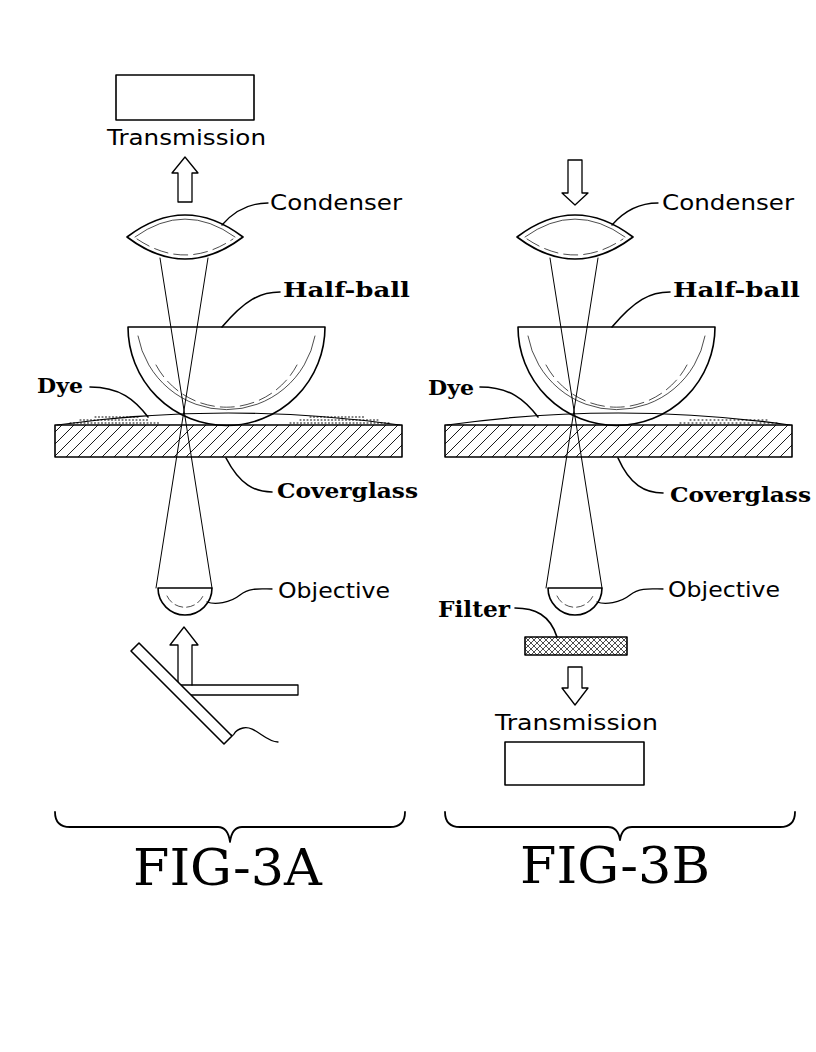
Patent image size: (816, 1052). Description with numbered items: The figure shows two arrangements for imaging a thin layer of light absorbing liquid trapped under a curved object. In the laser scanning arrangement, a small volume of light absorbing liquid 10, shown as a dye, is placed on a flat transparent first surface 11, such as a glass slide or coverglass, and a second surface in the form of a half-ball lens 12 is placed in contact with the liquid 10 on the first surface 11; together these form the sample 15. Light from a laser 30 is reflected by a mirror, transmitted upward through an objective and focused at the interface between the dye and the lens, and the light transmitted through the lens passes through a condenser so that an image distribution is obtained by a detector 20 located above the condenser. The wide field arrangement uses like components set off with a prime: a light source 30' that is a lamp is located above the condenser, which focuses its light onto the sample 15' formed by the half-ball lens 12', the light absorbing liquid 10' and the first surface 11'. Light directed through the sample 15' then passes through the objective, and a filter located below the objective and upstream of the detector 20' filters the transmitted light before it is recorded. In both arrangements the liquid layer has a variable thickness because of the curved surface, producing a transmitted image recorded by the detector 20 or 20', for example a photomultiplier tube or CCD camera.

In FIG. 3A, the detector 20 is at (157, 75).
In FIG. 3A, the sample 15 is at (226, 372).
In FIG. 3A, the half-ball lens 12 is at (201, 363).
In FIG. 3A, the light absorbing liquid 10 is at (228, 401).
In FIG. 3A, the first surface 11 is at (226, 464).
In FIG. 3A, the laser 30 is at (248, 686).
In FIG. 3B, the light source 30' is at (614, 142).
In FIG. 3B, the sample 15' is at (616, 396).
In FIG. 3B, the half-ball lens 12' is at (591, 363).
In FIG. 3B, the light absorbing liquid 10' is at (618, 401).
In FIG. 3B, the first surface 11' is at (616, 489).
In FIG. 3B, the detector 20' is at (624, 769).